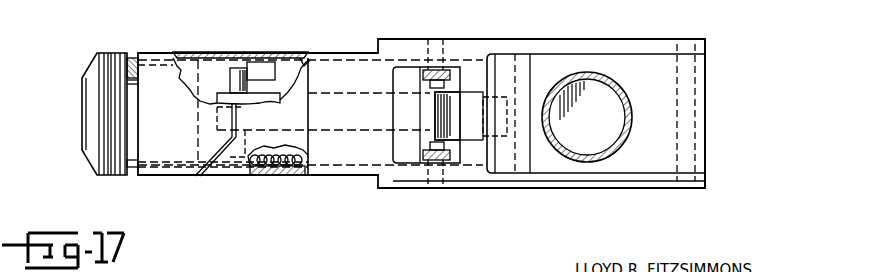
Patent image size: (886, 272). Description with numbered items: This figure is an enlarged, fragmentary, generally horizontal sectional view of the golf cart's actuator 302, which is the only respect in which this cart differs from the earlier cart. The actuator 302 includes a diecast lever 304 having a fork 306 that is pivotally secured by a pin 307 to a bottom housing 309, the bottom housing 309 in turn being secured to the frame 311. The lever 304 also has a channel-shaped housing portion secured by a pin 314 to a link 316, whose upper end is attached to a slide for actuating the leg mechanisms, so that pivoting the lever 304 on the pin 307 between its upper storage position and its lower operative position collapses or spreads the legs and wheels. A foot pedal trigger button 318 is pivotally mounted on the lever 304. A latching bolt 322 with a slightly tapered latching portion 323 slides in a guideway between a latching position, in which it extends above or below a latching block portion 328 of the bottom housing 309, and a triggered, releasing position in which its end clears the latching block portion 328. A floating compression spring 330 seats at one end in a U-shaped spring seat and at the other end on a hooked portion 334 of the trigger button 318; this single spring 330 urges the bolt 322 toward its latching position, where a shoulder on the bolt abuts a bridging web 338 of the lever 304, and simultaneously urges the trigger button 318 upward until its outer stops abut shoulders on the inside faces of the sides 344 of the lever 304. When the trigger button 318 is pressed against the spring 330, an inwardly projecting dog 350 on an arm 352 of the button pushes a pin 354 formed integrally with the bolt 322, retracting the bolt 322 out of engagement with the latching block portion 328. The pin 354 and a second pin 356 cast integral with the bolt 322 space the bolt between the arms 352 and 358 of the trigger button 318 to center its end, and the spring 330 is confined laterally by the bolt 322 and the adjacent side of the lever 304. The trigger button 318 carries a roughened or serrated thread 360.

The actuator 302 is at (484, 220).
The diecast lever 304 is at (340, 191).
The fork 306 is at (565, 183).
The pin 307 is at (675, 100).
The bottom housing 309 is at (707, 126).
The frame 311 is at (622, 137).
The pin 314 is at (460, 50).
The link 316 is at (438, 160).
The foot pedal trigger button 318 is at (90, 56).
The latching bolt 322 is at (297, 64).
The latching portion 323 is at (463, 130).
The latching block portion 328 is at (493, 66).
The compression spring 330 is at (282, 178).
The hooked portion 334 is at (256, 178).
The bridging web 338 is at (405, 144).
The sides 344 is at (270, 97).
The dog 350 is at (258, 72).
The arm 352 is at (225, 57).
The pin 354 is at (232, 78).
The pin 356 is at (230, 146).
The arm 358 is at (157, 178).
The serrated thread 360 is at (91, 117).